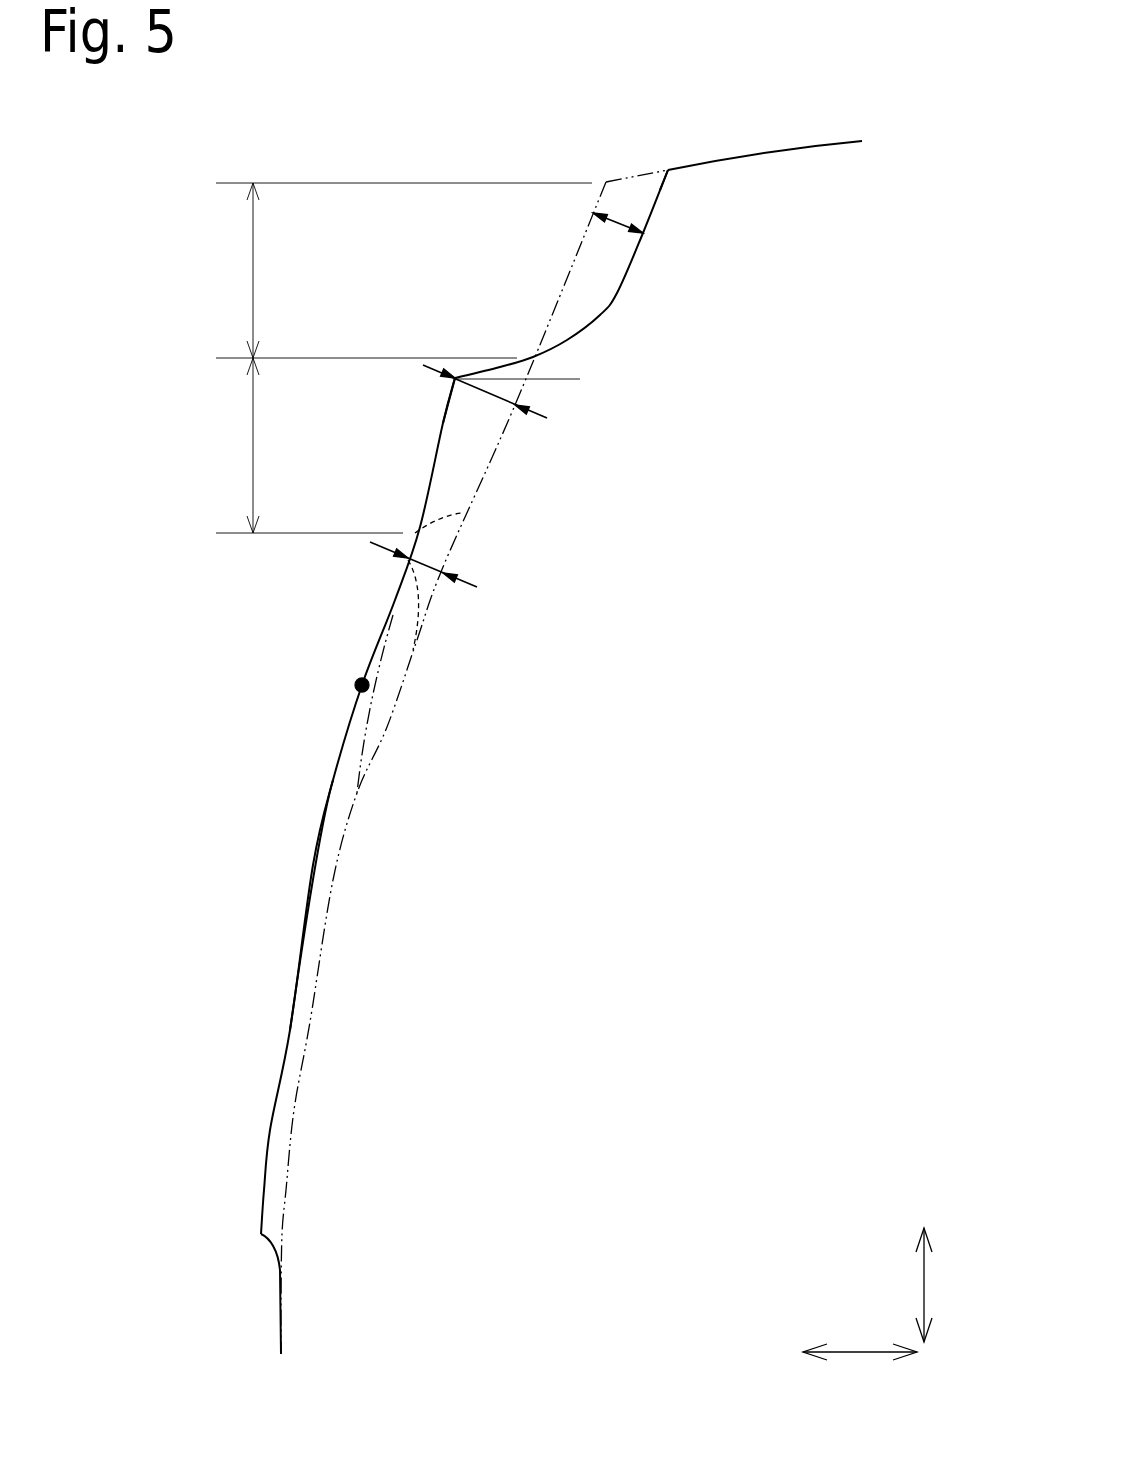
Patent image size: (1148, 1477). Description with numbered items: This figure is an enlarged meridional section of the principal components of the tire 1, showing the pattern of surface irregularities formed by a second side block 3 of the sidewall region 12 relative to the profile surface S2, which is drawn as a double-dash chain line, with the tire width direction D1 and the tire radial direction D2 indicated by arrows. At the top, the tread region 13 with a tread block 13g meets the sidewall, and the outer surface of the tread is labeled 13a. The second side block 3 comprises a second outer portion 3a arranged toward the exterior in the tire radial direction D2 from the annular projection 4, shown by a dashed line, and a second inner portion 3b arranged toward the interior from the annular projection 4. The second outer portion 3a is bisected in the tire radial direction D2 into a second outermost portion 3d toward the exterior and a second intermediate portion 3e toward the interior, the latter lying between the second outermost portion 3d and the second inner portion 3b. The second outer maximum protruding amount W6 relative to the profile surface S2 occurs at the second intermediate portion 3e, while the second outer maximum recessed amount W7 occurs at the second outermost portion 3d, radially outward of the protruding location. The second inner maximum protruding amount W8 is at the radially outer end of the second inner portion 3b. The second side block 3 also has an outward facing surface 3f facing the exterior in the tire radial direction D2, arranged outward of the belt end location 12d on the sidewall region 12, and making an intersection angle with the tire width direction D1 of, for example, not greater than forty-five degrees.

The tire 1 is at (162, 137).
The second side block 3 is at (375, 613).
The second outer portion 3a is at (445, 412).
The second inner portion 3b is at (318, 847).
The second outermost portion 3d is at (404, 270).
The second intermediate portion 3e is at (309, 445).
The outward facing surface 3f is at (482, 368).
The annular projection 4 is at (442, 522).
The sidewall region 12 is at (192, 615).
The belt end location 12d is at (339, 685).
The tread region 13 is at (615, 157).
The upper surface 13a is at (760, 155).
The tread block 13g is at (680, 167).
The profile surface S2 is at (360, 787).
The second outer maximum protruding amount W6 is at (503, 401).
The second outer maximum recessed amount W7 is at (618, 230).
The second inner maximum protruding amount W8 is at (443, 573).
The tire width direction D1 is at (860, 1363).
The tire radial direction D2 is at (937, 1285).